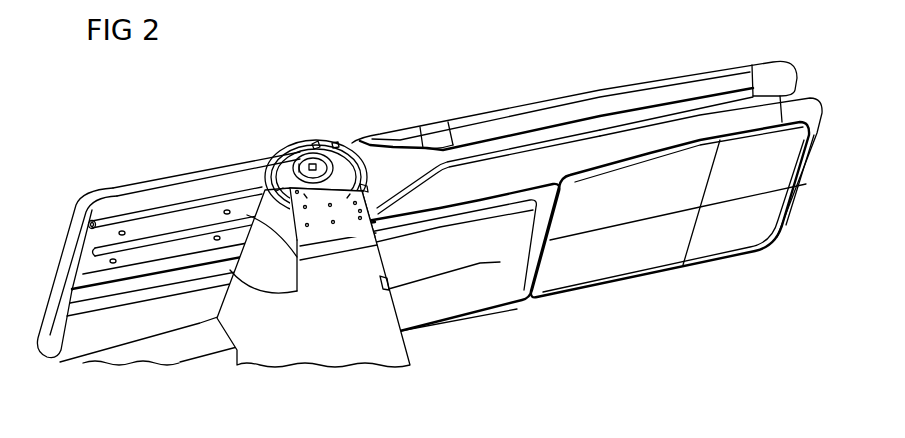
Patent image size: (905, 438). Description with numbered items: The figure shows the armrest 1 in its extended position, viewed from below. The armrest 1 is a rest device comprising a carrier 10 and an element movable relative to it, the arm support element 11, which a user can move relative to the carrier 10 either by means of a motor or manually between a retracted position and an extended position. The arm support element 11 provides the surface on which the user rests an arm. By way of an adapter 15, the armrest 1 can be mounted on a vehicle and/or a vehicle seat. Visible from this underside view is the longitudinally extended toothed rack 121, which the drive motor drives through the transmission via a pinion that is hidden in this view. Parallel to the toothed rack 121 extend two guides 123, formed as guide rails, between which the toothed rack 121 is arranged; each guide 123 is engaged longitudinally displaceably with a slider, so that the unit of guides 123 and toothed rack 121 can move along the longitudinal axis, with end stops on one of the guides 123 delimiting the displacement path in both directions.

The armrest 1 is at (253, 126).
The carrier 10 is at (560, 119).
The arm support element 11 is at (177, 172).
The toothed rack 121 is at (140, 250).
The guide 123 is at (216, 204).
The adapter 15 is at (400, 343).